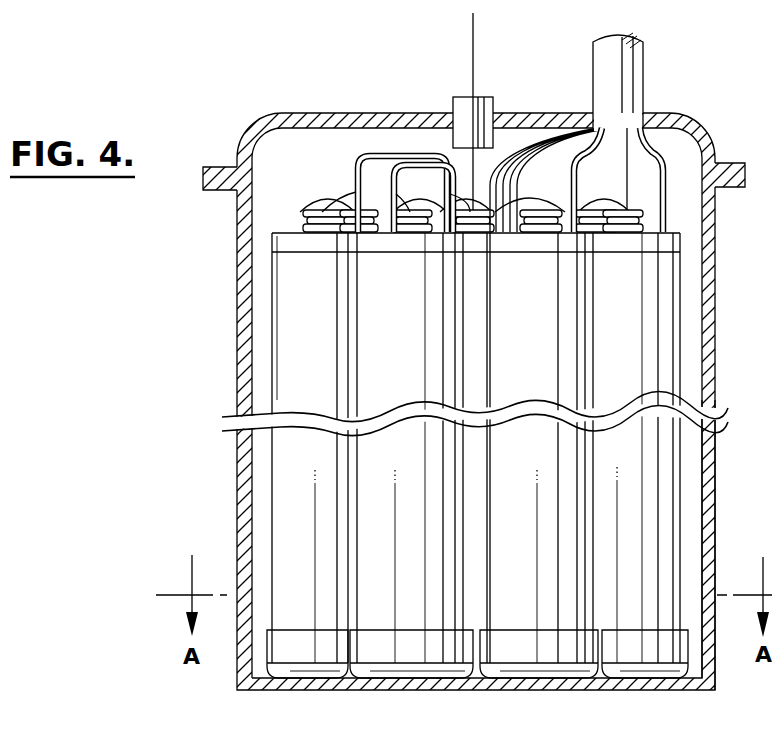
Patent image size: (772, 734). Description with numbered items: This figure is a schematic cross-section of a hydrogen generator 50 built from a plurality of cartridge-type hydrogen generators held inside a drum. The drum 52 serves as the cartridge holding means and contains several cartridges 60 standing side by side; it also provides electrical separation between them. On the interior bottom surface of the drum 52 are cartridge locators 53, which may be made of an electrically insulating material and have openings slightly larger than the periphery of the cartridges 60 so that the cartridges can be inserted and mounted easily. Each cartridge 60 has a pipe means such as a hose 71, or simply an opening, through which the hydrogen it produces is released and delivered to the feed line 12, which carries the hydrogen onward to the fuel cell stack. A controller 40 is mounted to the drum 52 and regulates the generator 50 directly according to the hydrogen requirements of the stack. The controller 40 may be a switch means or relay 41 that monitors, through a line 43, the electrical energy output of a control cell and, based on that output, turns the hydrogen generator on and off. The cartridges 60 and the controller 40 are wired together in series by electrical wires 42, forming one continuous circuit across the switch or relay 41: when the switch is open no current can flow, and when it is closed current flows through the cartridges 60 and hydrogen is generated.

The feed line 12 is at (630, 69).
The controller 40 is at (461, 111).
The relay 41 is at (494, 100).
The electrical wires 42 is at (517, 181).
The line 43 is at (476, 52).
The hydrogen generator 50 is at (226, 350).
The drum 52 is at (715, 353).
The cartridge locators 53 is at (380, 668).
The cartridges 60 is at (633, 531).
The hose 71 is at (356, 170).